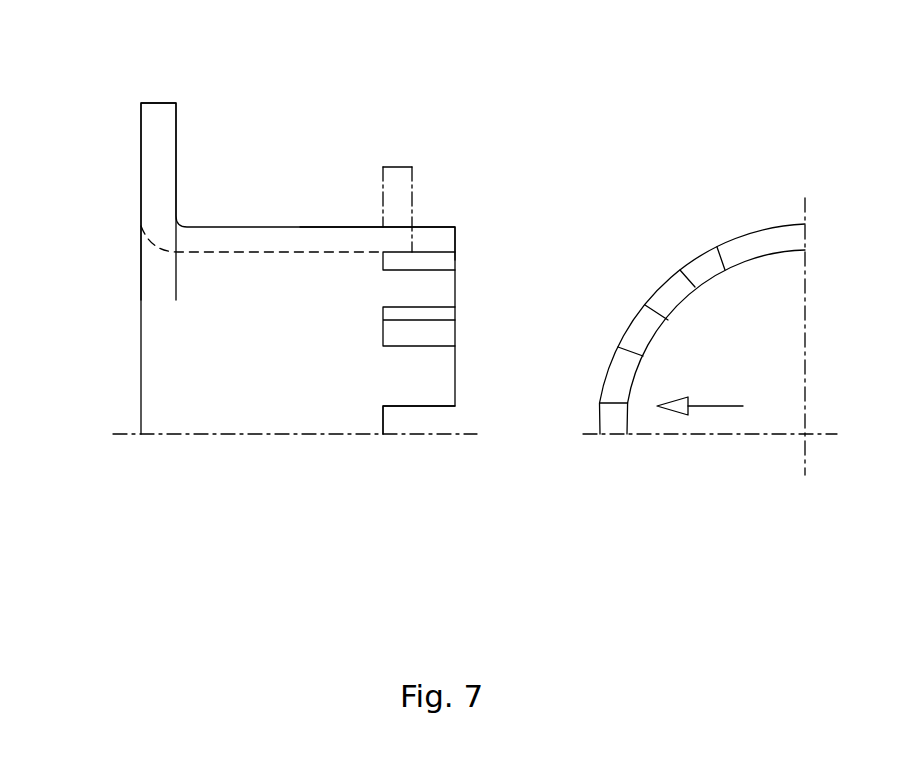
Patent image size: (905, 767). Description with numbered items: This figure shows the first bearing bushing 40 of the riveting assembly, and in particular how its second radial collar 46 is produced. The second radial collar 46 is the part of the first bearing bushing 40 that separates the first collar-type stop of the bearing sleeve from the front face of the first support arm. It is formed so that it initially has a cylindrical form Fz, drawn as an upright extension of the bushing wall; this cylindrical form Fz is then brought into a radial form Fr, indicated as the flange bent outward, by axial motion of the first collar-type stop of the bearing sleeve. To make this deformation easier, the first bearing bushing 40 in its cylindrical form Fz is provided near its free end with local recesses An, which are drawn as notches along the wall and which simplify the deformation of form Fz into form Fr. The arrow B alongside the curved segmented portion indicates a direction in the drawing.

The first bearing bushing 40 is at (165, 100).
The second radial collar 46 is at (152, 181).
The radial form Fr is at (405, 165).
The cylindrical form Fz is at (457, 224).
The local recesses An is at (428, 326).
The direction of movement B is at (700, 391).